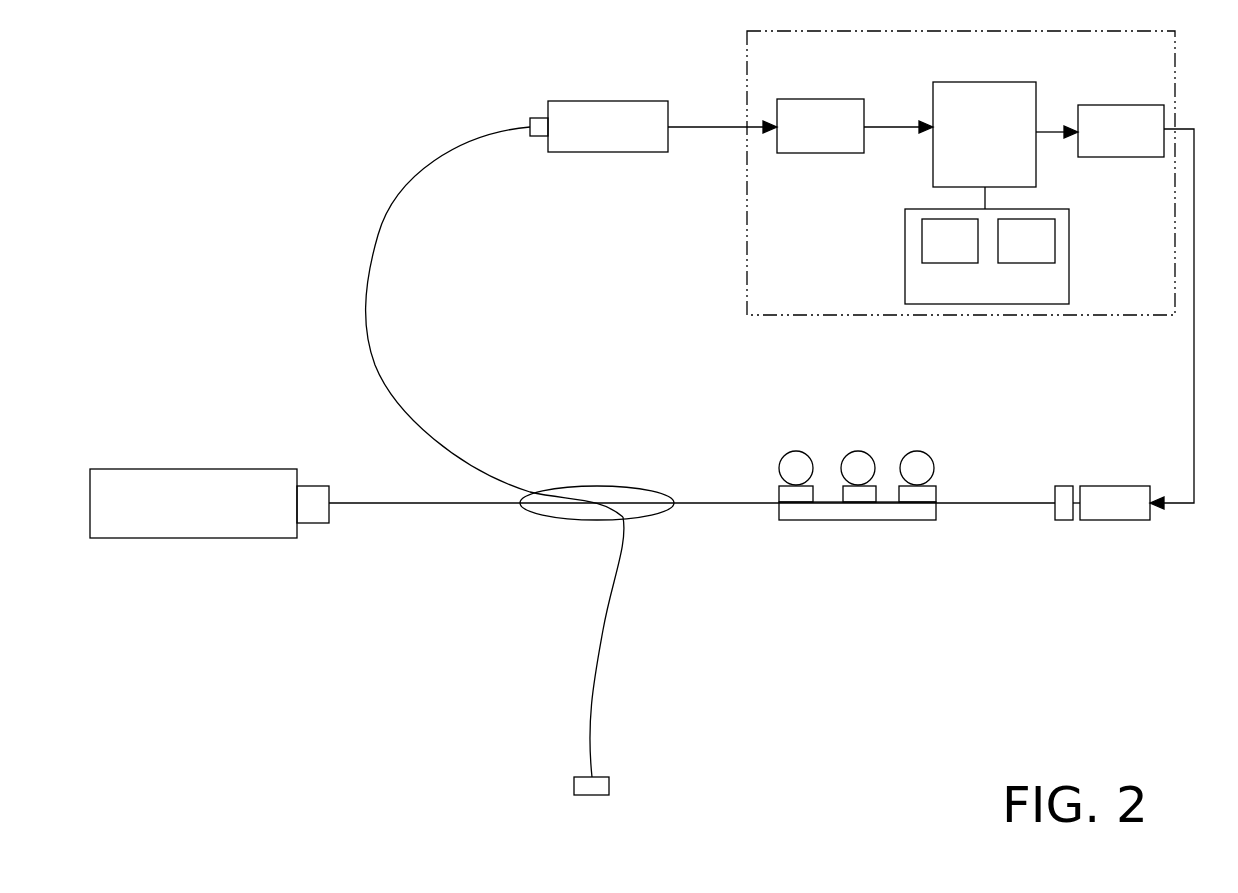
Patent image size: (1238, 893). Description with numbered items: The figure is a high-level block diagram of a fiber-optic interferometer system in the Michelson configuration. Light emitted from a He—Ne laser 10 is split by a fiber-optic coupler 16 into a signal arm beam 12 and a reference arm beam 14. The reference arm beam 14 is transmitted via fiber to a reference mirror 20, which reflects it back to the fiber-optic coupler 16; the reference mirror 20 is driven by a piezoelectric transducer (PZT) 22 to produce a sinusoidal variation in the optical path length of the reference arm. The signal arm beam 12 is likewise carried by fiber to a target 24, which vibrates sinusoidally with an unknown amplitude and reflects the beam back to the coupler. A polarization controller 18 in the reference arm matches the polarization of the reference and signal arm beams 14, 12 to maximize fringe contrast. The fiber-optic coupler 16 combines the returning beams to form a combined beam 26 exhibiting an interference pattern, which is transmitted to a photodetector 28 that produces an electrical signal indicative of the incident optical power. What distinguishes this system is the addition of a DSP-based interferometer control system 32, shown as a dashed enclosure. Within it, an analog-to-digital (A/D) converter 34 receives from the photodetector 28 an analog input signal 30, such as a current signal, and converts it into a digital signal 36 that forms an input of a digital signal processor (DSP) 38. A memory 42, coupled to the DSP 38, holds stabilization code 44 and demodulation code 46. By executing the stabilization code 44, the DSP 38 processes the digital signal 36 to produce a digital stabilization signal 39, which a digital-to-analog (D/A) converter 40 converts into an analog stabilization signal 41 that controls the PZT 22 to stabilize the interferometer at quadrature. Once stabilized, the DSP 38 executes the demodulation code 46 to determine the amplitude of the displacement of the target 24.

The He—Ne laser 10 is at (205, 469).
The signal arm beam 12 is at (614, 592).
The reference arm beam 14 is at (712, 503).
The fiber-optic coupler 16 is at (663, 491).
The polarization controller 18 is at (865, 451).
The reference mirror 20 is at (1066, 486).
The piezoelectric transducer (PZT) 22 is at (1138, 486).
The target 24 is at (610, 785).
The combined beam 26 is at (378, 227).
The photodetector 28 is at (603, 101).
The analog input signal 30 is at (695, 127).
The interferometer control system 32 is at (932, 31).
The analog-to-digital (A/D) converter 34 is at (808, 99).
The digital signal 36 is at (878, 127).
The digital signal processor (DSP) 38 is at (983, 82).
The digital stabilization signal 39 is at (1043, 130).
The digital-to-analog (D/A) converter 40 is at (1120, 105).
The analog stabilization signal 41 is at (1195, 208).
The memory 42 is at (1045, 209).
The stabilization code 44 is at (950, 241).
The demodulation code 46 is at (1026, 241).